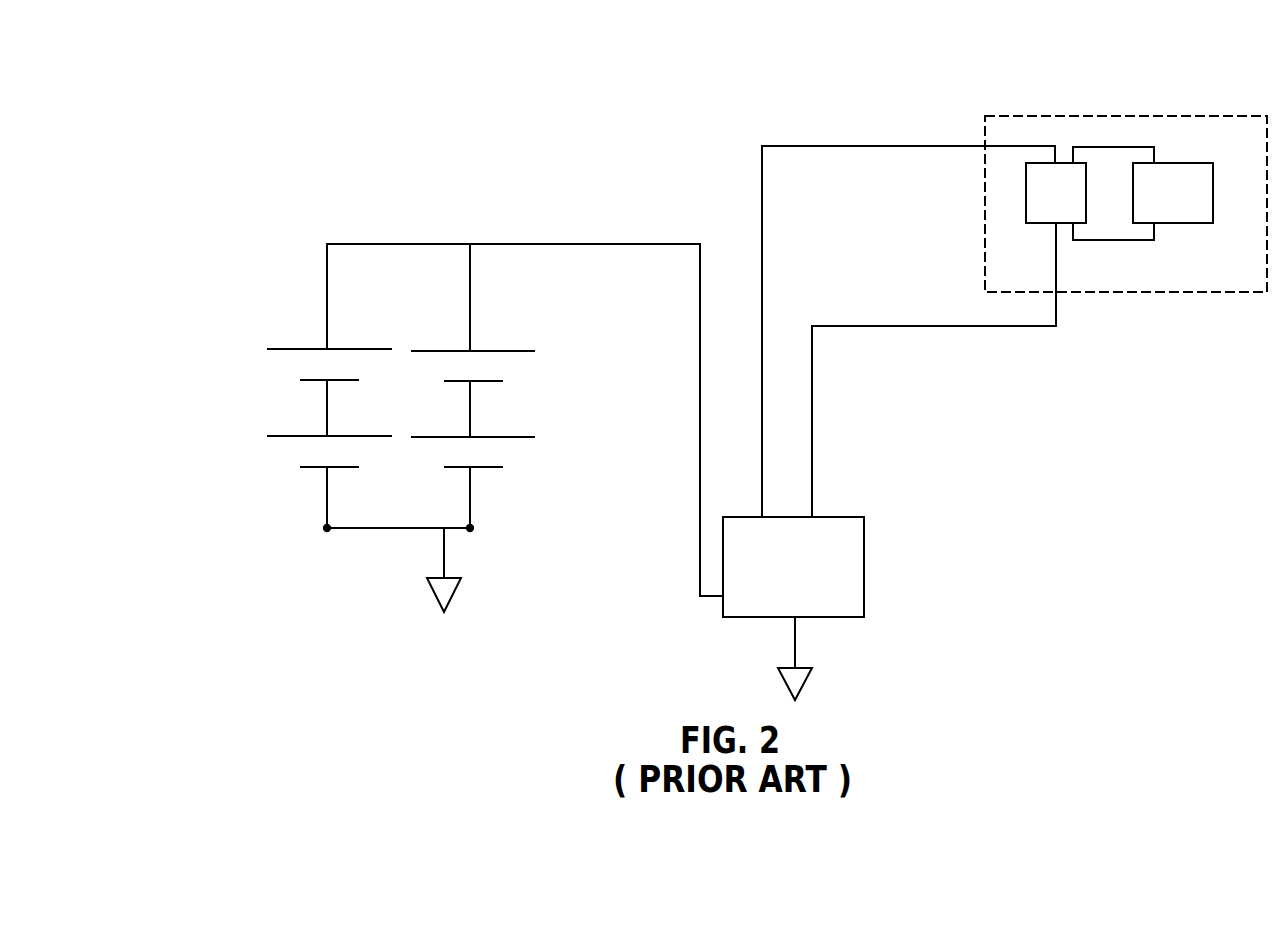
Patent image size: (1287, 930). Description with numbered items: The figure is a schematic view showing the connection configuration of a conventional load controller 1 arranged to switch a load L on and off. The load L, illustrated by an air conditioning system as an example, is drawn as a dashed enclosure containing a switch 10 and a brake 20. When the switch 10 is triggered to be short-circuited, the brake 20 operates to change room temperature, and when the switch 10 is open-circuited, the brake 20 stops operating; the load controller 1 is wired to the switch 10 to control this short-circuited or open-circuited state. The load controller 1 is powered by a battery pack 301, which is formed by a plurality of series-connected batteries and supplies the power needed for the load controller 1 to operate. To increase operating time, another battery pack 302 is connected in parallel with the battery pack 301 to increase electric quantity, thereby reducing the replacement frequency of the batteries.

The load controller 1 is at (835, 579).
The switch 10 is at (1048, 192).
The brake 20 is at (1178, 193).
The load L is at (1128, 110).
The battery pack 301 is at (535, 423).
The battery pack 302 is at (290, 418).